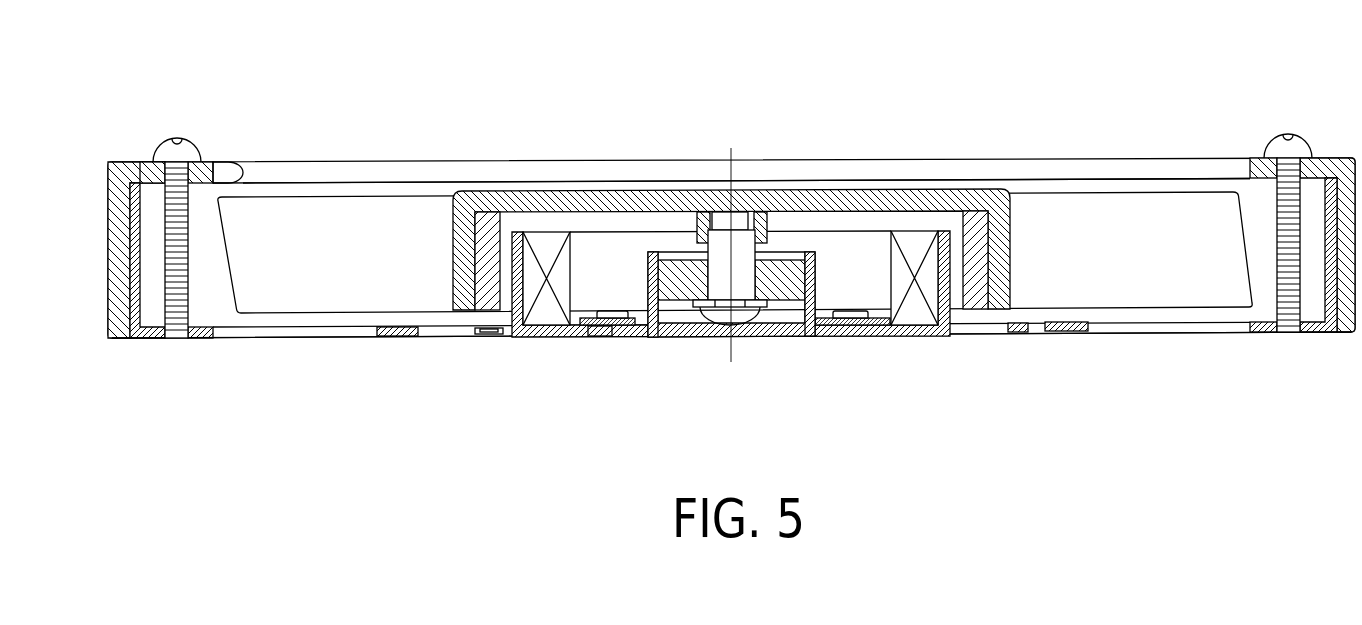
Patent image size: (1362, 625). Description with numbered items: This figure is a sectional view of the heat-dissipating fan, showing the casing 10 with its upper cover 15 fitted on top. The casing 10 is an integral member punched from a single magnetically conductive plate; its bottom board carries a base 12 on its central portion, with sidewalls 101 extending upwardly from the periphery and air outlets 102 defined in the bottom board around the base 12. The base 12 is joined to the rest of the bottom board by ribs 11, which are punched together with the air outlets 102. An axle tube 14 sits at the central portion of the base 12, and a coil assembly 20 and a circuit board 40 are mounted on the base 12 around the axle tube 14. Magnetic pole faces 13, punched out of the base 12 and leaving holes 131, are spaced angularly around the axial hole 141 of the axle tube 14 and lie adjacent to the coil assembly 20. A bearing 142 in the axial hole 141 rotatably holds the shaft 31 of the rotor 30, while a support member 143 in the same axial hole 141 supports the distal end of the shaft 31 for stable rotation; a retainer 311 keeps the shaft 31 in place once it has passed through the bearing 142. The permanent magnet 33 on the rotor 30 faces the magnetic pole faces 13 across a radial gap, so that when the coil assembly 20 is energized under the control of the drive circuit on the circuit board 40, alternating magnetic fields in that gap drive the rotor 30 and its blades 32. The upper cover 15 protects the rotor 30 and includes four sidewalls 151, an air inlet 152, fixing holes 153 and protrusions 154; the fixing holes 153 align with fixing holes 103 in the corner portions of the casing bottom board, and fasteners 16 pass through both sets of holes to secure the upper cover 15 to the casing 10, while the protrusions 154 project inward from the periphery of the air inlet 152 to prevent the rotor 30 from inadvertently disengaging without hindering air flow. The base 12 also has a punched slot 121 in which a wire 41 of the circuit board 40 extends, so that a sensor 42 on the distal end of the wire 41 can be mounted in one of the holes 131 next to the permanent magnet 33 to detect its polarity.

The casing 10 is at (1250, 368).
The sidewalls 101 is at (125, 283).
The air outlets 102 is at (1163, 332).
The fixing holes 103 is at (1293, 332).
The ribs 11 is at (731, 335).
The base 12 is at (625, 333).
The slot 121 is at (530, 332).
The magnetic pole faces 13 is at (950, 310).
The holes 131 is at (433, 333).
The axle tube 14 is at (730, 248).
The axial hole 141 is at (667, 333).
The bearing 142 is at (683, 270).
The support member 143 is at (783, 333).
The upper cover 15 is at (90, 175).
The sidewalls 151 is at (135, 245).
The air inlet 152 is at (352, 172).
The fixing holes 153 is at (142, 172).
The protrusions 154 is at (222, 172).
The fasteners 16 is at (192, 158).
The coil assembly 20 is at (918, 310).
The rotor 30 is at (567, 191).
The shaft 31 is at (749, 257).
The retainer 311 is at (742, 325).
The blades 32 is at (323, 222).
The permanent magnet 33 is at (493, 228).
The circuit board 40 is at (600, 333).
The wire 41 is at (852, 321).
The sensor 42 is at (480, 334).